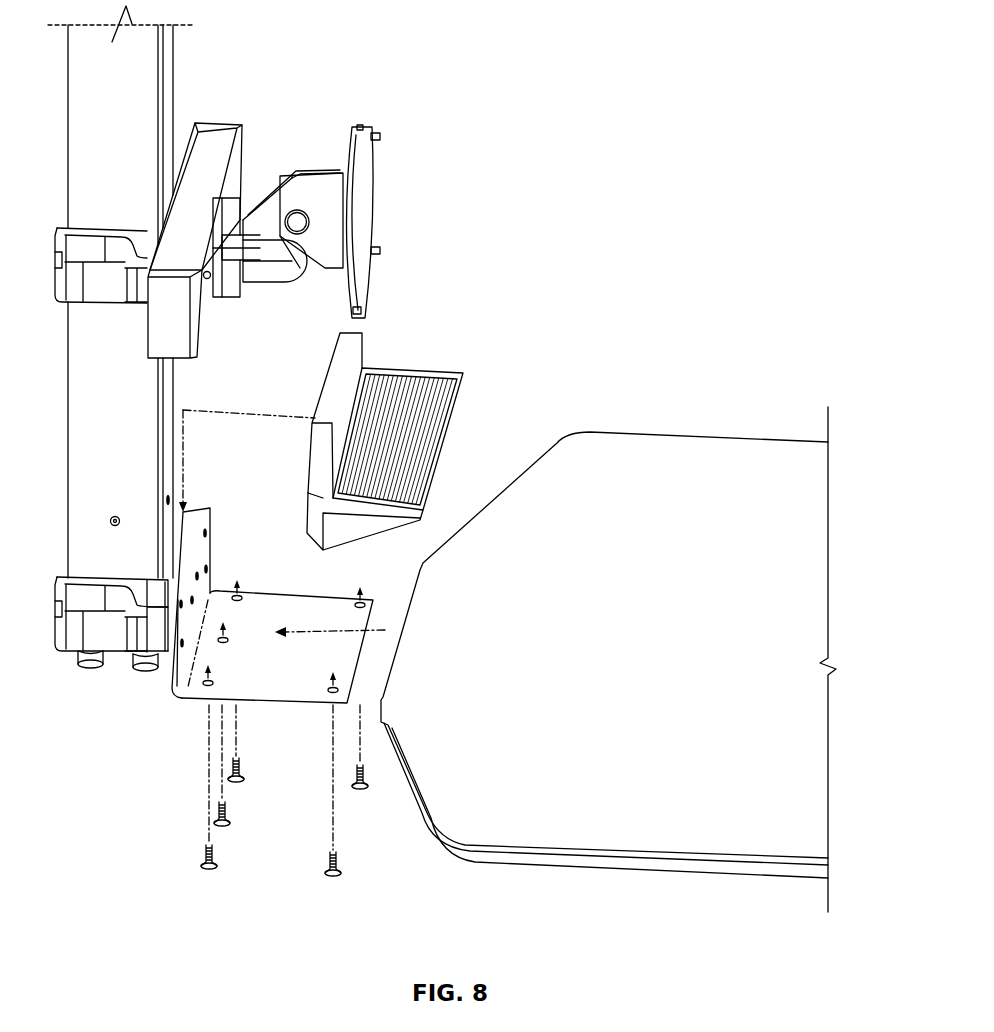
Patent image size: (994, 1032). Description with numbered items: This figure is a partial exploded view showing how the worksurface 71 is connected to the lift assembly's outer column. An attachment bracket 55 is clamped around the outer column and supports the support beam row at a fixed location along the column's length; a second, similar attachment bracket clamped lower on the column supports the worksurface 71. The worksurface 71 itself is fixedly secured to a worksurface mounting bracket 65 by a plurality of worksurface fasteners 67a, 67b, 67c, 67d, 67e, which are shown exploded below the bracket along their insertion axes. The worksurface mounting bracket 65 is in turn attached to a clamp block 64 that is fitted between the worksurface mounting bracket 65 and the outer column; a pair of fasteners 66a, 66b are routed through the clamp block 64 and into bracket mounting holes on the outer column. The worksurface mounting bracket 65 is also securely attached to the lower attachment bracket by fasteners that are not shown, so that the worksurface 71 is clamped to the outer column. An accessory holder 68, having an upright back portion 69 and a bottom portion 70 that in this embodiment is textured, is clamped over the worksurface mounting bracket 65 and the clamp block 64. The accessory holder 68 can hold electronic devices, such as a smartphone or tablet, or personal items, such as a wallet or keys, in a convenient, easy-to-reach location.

The attachment bracket 55 is at (68, 246).
The clamp block 64 is at (186, 535).
The worksurface mounting bracket 65 is at (172, 690).
The fastener 66a is at (194, 601).
The fastener 66b is at (207, 574).
The worksurface fastener 67a is at (201, 865).
The worksurface fastener 67b is at (230, 822).
The worksurface fastener 67c is at (244, 780).
The worksurface fastener 67d is at (361, 790).
The worksurface fastener 67e is at (342, 874).
The accessory holder 68 is at (427, 413).
The upright back portion 69 is at (348, 344).
The bottom portion 70 is at (430, 432).
The worksurface 71 is at (722, 436).